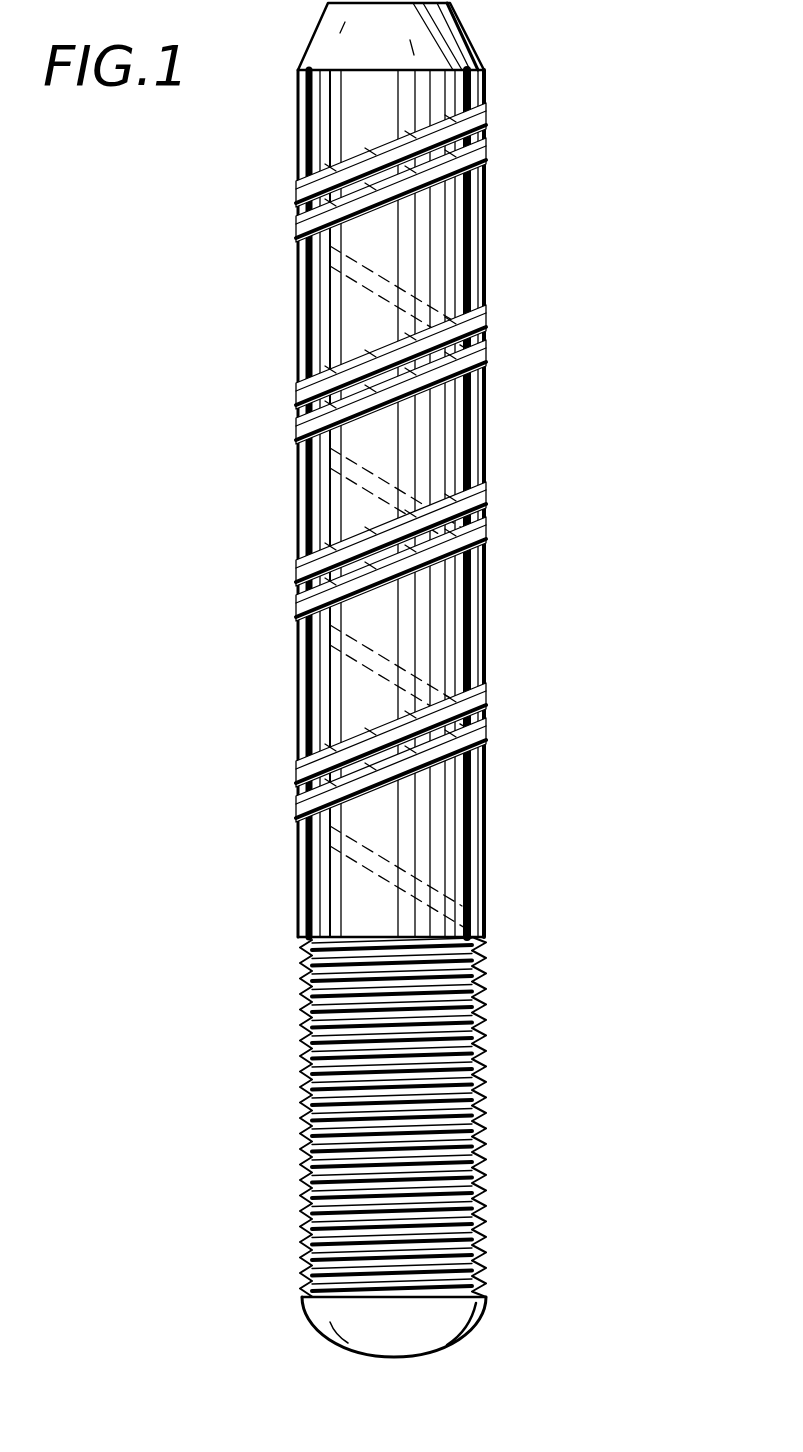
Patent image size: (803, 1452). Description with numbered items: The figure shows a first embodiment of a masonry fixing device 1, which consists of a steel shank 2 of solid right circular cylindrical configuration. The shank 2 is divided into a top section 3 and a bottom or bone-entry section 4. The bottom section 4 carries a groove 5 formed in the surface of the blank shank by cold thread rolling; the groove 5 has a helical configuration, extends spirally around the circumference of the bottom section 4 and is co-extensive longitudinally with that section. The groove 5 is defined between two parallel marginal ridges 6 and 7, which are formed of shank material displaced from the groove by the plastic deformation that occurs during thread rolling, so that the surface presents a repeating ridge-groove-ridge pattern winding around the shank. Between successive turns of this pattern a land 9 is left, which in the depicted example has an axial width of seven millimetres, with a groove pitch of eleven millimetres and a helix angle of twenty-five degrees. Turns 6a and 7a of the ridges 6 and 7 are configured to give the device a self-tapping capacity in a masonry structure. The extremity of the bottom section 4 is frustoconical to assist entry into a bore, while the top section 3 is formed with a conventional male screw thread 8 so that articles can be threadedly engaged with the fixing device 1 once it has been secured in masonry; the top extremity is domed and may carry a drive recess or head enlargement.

The fixing device 1 is at (514, 72).
The steel shank 2 is at (484, 628).
The top section 3 is at (486, 1042).
The bottom or bone-entry section 4 is at (484, 228).
The groove 5 is at (484, 340).
The marginal ridge 6 is at (388, 442).
The marginal ridge 7 is at (415, 468).
The turn of ridge 6a is at (486, 110).
The turn of ridge 7a is at (486, 152).
The male screw thread 8 is at (308, 1070).
The land 9 is at (328, 313).